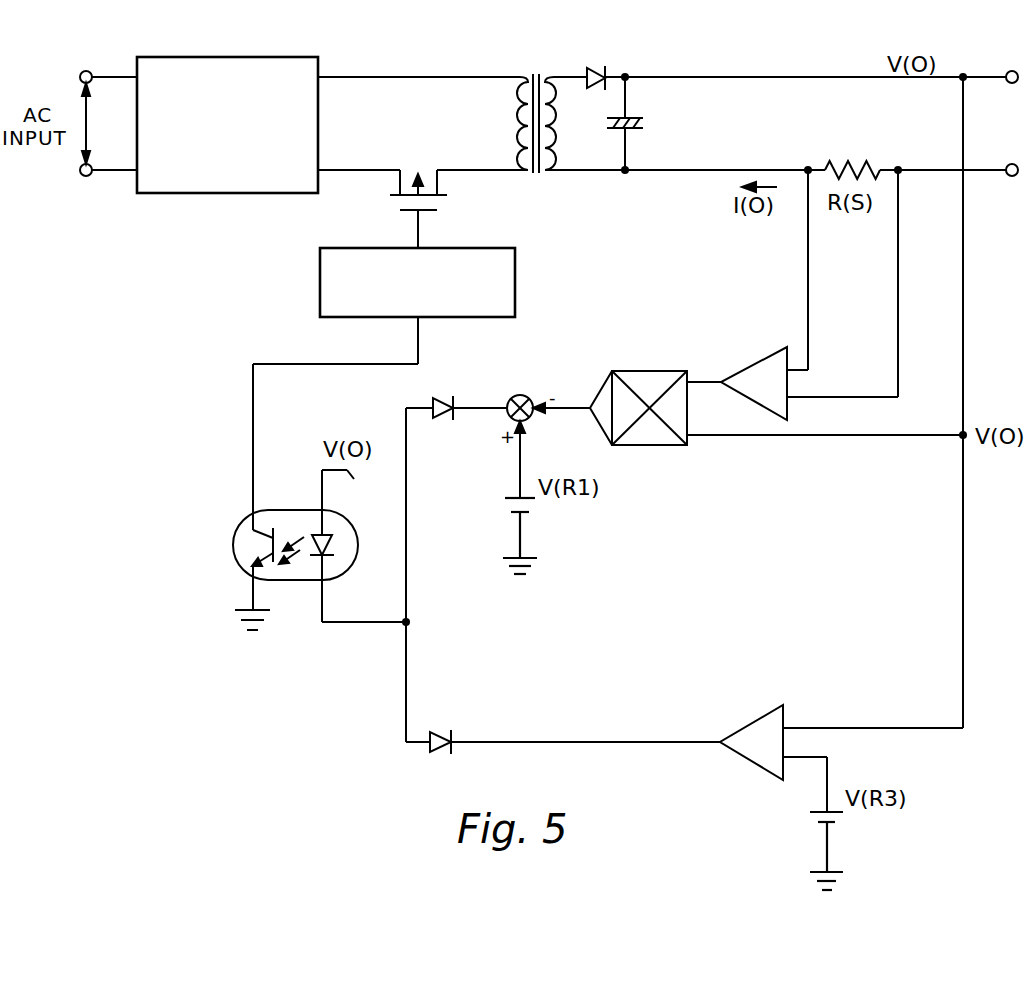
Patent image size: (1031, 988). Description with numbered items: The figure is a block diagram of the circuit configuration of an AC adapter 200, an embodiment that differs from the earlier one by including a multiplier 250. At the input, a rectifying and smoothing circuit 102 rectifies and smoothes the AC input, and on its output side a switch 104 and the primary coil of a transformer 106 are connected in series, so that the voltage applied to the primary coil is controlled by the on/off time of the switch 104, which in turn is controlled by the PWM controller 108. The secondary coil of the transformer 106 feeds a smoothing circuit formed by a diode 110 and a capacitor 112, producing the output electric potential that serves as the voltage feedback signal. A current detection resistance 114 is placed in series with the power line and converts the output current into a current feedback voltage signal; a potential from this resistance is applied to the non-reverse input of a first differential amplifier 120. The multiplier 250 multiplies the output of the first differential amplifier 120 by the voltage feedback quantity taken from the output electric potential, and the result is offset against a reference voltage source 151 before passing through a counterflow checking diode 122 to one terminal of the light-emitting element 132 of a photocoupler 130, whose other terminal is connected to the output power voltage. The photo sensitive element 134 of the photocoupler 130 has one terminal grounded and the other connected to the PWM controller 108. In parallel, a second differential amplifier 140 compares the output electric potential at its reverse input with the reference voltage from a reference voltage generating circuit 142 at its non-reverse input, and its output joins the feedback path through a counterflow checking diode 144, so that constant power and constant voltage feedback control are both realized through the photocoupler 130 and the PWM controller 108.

The rectifying and smoothing circuit 102 is at (184, 194).
The switch 104 is at (400, 200).
The transformer 106 is at (523, 175).
The PWM controller 108 is at (320, 298).
The diode 110 is at (596, 67).
The capacitor 112 is at (632, 116).
The current detection resistance 114 is at (878, 166).
The first differential amplifier 120 is at (770, 345).
The counterflow checking diode 122 is at (446, 420).
The photocoupler 130 is at (232, 534).
The light-emitting element 132 is at (318, 522).
The photo sensitive element 134 is at (236, 545).
The second differential amplifier 140 is at (768, 703).
The reference voltage generating circuit 142 is at (810, 815).
The counterflow checking diode 144 is at (451, 732).
The reference voltage source V(R1) 151 is at (505, 505).
The multiplier 250 is at (600, 378).
The AC adapter 200 is at (260, 752).